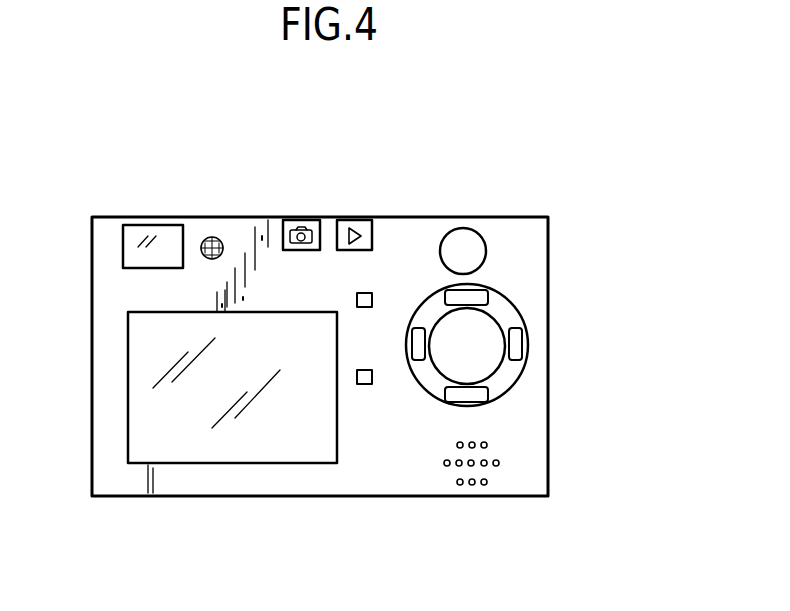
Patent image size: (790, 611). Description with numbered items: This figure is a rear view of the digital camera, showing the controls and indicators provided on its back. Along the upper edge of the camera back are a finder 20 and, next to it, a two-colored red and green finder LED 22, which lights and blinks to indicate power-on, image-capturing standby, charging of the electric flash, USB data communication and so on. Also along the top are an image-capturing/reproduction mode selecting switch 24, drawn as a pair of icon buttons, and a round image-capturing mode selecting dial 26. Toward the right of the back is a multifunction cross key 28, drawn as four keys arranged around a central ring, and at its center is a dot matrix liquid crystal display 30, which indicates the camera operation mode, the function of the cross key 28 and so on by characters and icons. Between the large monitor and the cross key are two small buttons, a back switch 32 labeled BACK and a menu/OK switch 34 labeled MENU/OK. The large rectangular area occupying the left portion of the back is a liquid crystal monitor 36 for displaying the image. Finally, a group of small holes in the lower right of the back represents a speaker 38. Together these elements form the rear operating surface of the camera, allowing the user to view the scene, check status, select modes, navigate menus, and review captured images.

The finder 20 is at (168, 225).
The finder LED 22 is at (213, 240).
The image-capturing/reproduction mode selecting switch 24 is at (360, 227).
The image-capturing mode selecting dial 26 is at (468, 237).
The multifunction cross key 28 is at (487, 398).
The dot matrix liquid crystal display 30 is at (457, 370).
The back switch 32 is at (357, 305).
The menu/OK switch 34 is at (357, 380).
The liquid crystal monitor 36 is at (183, 445).
The speaker 38 is at (500, 455).